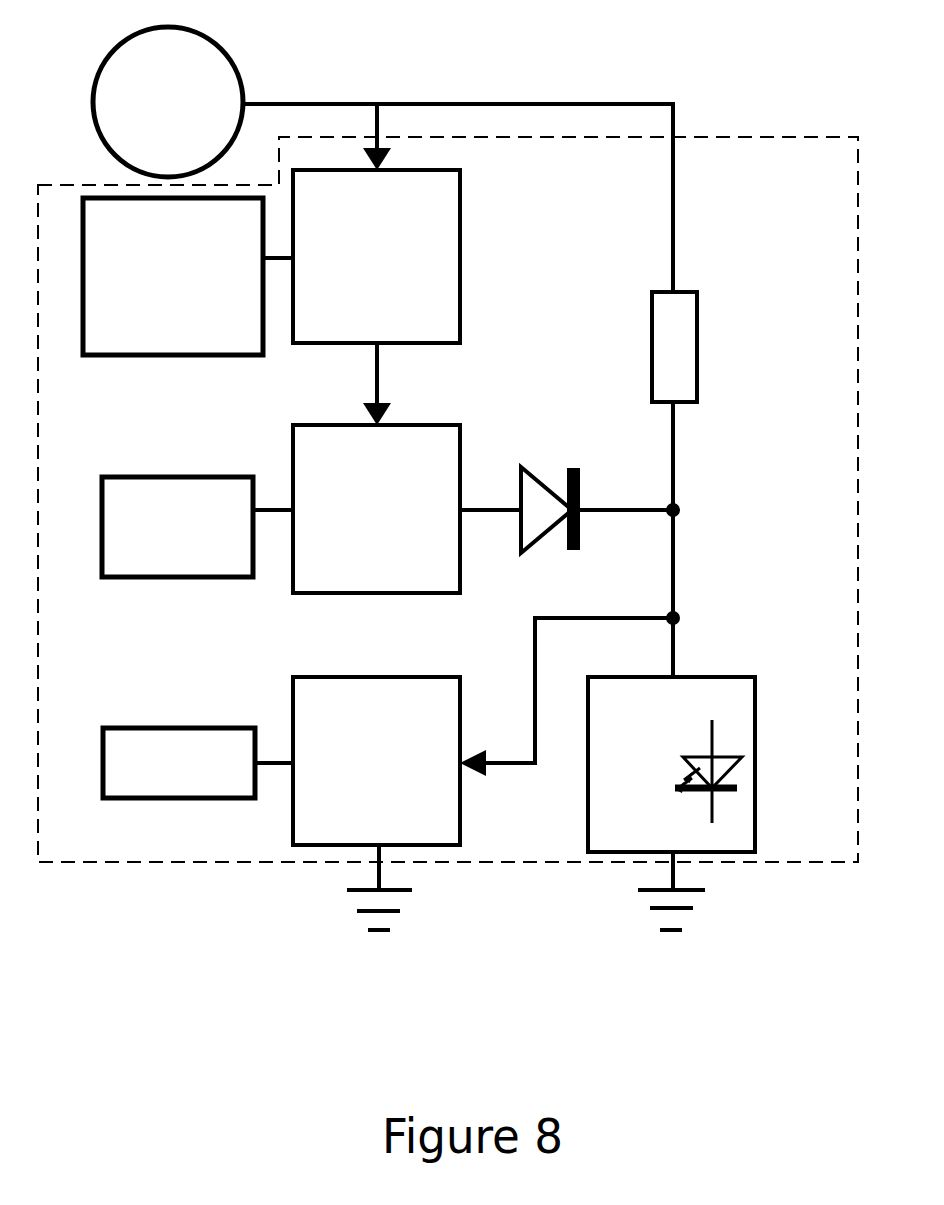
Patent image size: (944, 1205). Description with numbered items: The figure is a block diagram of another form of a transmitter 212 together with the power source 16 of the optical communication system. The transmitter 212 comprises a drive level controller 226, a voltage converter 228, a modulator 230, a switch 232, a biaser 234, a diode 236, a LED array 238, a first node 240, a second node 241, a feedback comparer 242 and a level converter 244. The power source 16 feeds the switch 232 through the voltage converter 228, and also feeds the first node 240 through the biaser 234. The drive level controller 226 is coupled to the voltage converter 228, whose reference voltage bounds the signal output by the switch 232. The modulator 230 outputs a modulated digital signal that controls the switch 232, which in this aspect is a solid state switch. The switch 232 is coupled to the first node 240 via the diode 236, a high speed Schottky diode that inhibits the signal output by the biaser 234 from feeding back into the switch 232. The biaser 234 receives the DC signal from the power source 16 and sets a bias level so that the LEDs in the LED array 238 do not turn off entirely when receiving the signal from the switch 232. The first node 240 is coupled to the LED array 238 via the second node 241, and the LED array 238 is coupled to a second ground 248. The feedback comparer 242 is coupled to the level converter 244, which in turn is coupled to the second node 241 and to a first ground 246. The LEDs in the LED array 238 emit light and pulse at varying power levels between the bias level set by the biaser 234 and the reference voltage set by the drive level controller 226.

The power source 16 is at (215, 78).
The transmitter 212 is at (207, 862).
The drive level controller 226 is at (152, 342).
The voltage converter 228 is at (413, 282).
The modulator 230 is at (197, 497).
The switch 232 is at (390, 597).
The biaser 234 is at (680, 352).
The diode 236 is at (552, 565).
The LED array 238 is at (608, 827).
The first node 240 is at (665, 500).
The second node 241 is at (684, 618).
The feedback comparer 242 is at (212, 782).
The level converter 244 is at (312, 835).
The first ground 246 is at (348, 918).
The second ground 248 is at (643, 908).